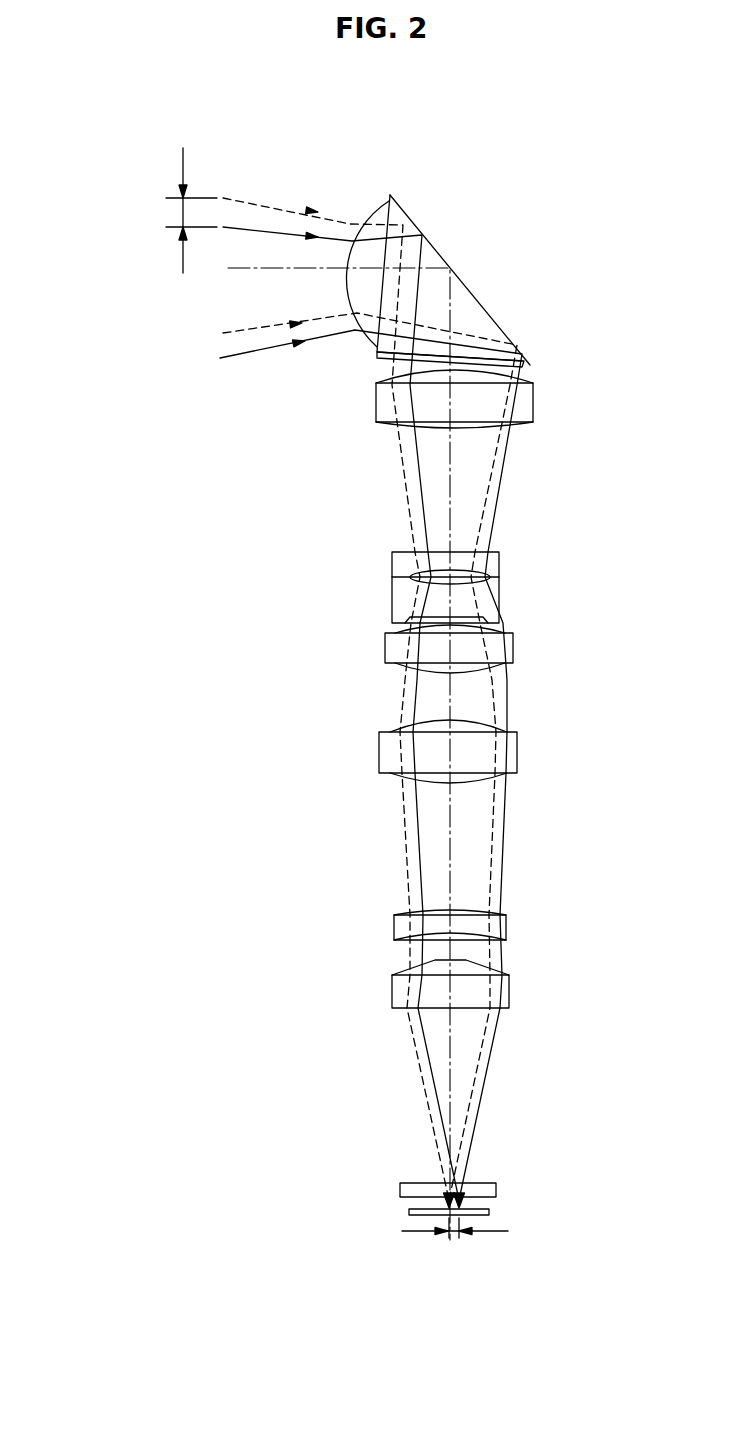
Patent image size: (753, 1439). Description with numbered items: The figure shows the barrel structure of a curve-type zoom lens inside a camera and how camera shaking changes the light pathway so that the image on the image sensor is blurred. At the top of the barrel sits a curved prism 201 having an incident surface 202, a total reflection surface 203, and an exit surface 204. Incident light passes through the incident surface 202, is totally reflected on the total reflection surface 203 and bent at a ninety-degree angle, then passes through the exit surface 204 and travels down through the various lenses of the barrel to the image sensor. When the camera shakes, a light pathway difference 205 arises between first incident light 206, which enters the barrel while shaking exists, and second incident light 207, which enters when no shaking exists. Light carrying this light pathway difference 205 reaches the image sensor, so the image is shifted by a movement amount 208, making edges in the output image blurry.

The curved prism 201 is at (437, 287).
The incident surface 202 is at (370, 222).
The total reflection surface 203 is at (435, 248).
The exit surface 204 is at (442, 375).
The light pathway difference 205 is at (184, 214).
The first incident light 206 is at (262, 203).
The second incident light 207 is at (243, 228).
The movement amount 208 is at (457, 1238).